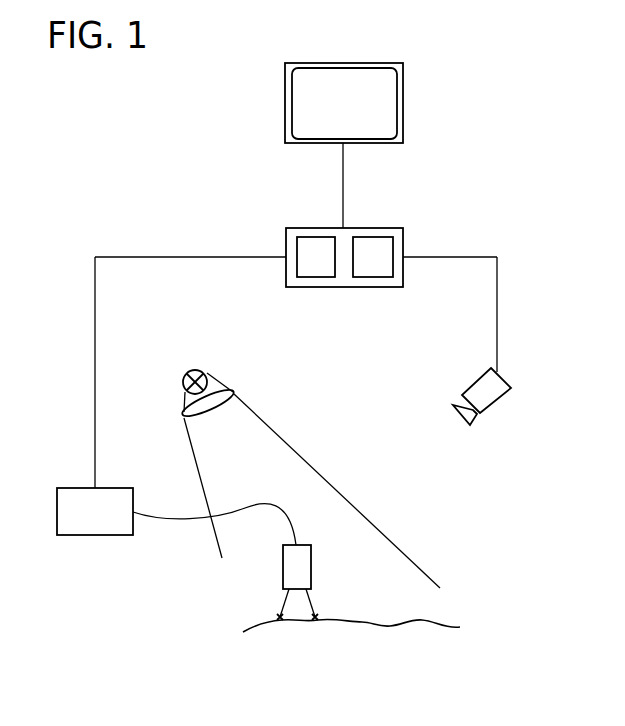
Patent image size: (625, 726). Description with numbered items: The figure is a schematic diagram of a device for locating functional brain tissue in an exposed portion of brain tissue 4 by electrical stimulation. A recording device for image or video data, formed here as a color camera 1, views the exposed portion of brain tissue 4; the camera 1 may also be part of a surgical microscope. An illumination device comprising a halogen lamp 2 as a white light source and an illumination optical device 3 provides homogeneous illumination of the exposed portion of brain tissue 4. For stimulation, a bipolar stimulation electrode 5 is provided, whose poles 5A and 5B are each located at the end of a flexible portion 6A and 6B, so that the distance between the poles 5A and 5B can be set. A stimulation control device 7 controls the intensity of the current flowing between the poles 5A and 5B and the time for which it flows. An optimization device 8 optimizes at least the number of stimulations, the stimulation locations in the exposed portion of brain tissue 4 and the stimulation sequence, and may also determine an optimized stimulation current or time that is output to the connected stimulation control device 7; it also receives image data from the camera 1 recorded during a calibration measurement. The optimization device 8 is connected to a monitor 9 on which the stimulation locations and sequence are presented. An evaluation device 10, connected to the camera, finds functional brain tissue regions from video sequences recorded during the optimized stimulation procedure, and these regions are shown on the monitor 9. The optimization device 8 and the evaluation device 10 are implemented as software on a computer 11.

The color camera 1 is at (497, 405).
The halogen lamp 2 is at (196, 368).
The illumination optical device 3 is at (237, 390).
The exposed portion of brain tissue 4 is at (418, 626).
The bipolar stimulation electrode 5 is at (311, 558).
The pole 5A is at (278, 618).
The pole 5B is at (318, 618).
The flexible portion 6A is at (282, 598).
The flexible portion 6B is at (314, 598).
The stimulation control device 7 is at (80, 488).
The optimization device 8 is at (372, 237).
The monitor 9 is at (403, 104).
The evaluation device 10 is at (317, 237).
The computer 11 is at (403, 240).